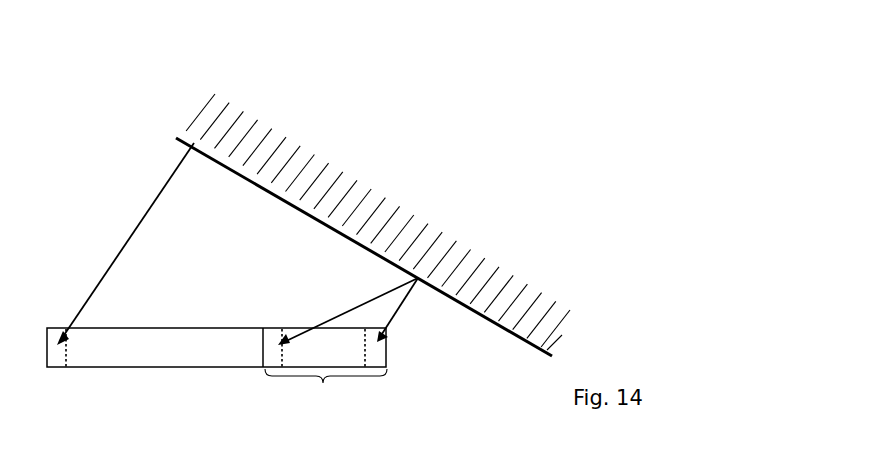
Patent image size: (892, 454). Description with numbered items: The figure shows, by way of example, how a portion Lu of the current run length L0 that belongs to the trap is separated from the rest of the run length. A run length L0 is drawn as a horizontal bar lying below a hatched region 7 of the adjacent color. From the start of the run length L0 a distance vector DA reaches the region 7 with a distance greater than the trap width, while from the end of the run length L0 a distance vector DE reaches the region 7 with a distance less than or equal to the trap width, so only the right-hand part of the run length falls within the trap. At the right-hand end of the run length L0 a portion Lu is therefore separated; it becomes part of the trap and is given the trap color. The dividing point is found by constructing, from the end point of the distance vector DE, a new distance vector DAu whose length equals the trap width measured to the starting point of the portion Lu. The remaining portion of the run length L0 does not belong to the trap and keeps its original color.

The region of the adjacent color 7 is at (439, 253).
The run length L0 is at (216, 347).
The portion of the run length belonging to the trap Lu is at (326, 372).
The distance vector DA(L0) DA is at (125, 244).
The distance vector DAu(Lu) DAu is at (348, 311).
The distance vector DE(L0) DE is at (419, 310).